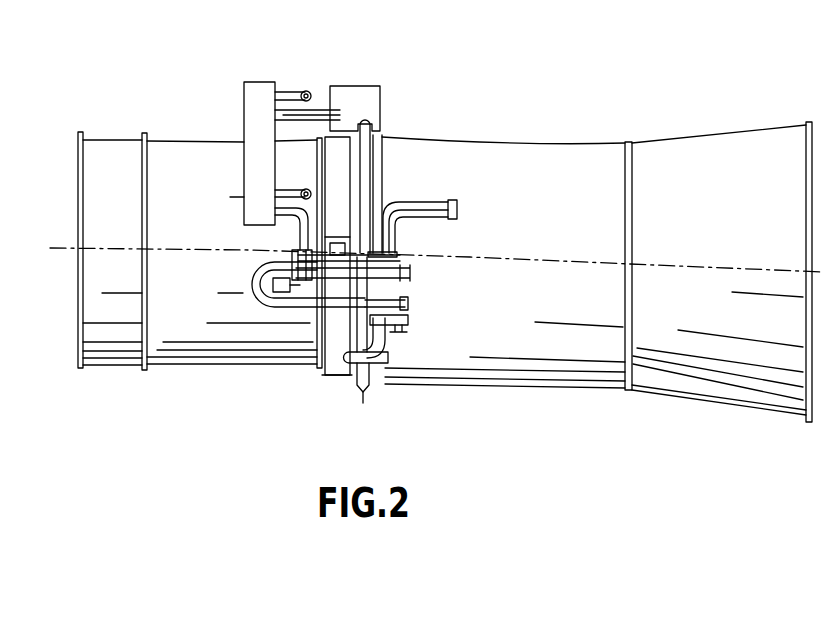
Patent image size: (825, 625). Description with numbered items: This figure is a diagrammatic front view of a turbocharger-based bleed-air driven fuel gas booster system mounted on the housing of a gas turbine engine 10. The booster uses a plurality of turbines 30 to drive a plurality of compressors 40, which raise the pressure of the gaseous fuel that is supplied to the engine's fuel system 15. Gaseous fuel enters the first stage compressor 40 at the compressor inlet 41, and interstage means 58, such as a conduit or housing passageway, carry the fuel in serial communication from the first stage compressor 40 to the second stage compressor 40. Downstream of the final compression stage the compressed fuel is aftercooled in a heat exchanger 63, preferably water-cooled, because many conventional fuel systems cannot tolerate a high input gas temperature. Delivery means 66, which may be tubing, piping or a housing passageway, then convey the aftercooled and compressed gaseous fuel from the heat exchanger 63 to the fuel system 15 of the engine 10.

The gas turbine engine 10 is at (574, 87).
The fuel system 15 is at (367, 102).
The turbine 30 is at (335, 240).
The compressor 40 is at (300, 257).
The compressor inlet 41 is at (395, 338).
The interstage means 58 is at (287, 313).
The heat exchanger 63 is at (252, 103).
The delivery means 66 is at (318, 103).